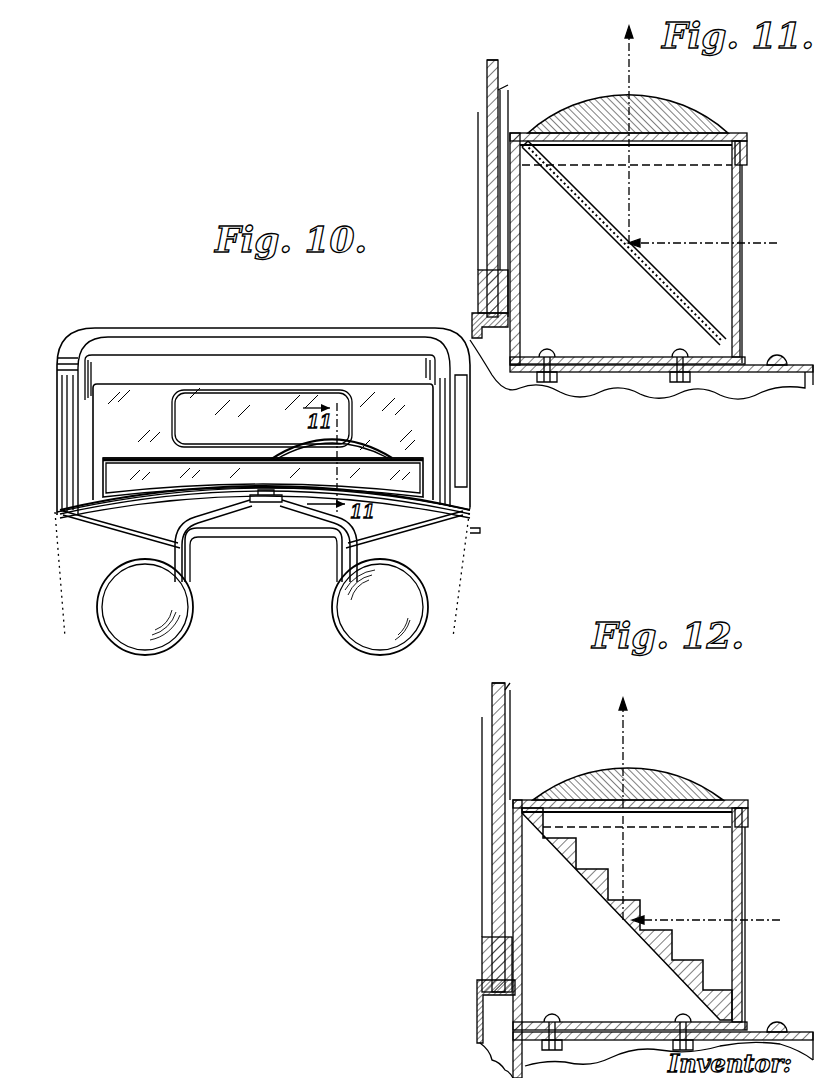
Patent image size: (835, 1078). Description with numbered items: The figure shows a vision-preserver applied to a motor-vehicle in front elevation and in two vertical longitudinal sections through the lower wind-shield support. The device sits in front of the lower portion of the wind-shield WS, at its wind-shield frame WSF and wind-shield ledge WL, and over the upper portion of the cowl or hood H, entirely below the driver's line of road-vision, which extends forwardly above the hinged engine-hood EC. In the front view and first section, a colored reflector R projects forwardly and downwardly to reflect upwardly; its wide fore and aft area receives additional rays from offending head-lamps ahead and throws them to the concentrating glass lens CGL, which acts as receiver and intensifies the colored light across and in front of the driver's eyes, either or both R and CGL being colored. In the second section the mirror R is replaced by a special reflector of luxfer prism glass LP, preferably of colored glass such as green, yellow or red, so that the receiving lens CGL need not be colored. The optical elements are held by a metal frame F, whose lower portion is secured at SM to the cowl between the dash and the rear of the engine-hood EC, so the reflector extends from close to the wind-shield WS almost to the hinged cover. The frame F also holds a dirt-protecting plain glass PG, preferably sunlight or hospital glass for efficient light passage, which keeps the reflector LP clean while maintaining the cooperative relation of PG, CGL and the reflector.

In FIG. 10, the wind-shield WS is at (263, 442).
In FIG. 11, the wind-shield WS is at (487, 82).
In FIG. 12, the wind-shield WS is at (492, 811).
In FIG. 11, the wind-shield frame WSF is at (483, 280).
In FIG. 12, the wind-shield frame WSF is at (481, 946).
In FIG. 10, the wind-shield ledge WL is at (448, 503).
In FIG. 11, the wind-shield ledge WL is at (475, 323).
In FIG. 12, the wind-shield ledge WL is at (477, 990).
In FIG. 10, the metal frame F is at (130, 465).
In FIG. 11, the metal frame F is at (748, 152).
In FIG. 12, the metal frame F is at (750, 813).
In FIG. 10, the protecting plain glass PG is at (412, 477).
In FIG. 11, the protecting plain glass PG is at (742, 208).
In FIG. 12, the protecting plain glass PG is at (745, 888).
In FIG. 10, the concentrating glass lens CGL is at (392, 458).
In FIG. 11, the concentrating glass lens CGL is at (664, 110).
In FIG. 12, the concentrating glass lens CGL is at (690, 767).
In FIG. 11, the reflector R is at (674, 294).
In FIG. 11, the securing means SM is at (678, 348).
In FIG. 12, the securing means SM is at (680, 1015).
In FIG. 10, the hood H is at (110, 512).
In FIG. 11, the hood H is at (720, 370).
In FIG. 12, the hood H is at (753, 1032).
In FIG. 12, the luxfer prism glass LP is at (607, 879).
In FIG. 12, the engine-hood EC is at (793, 1032).